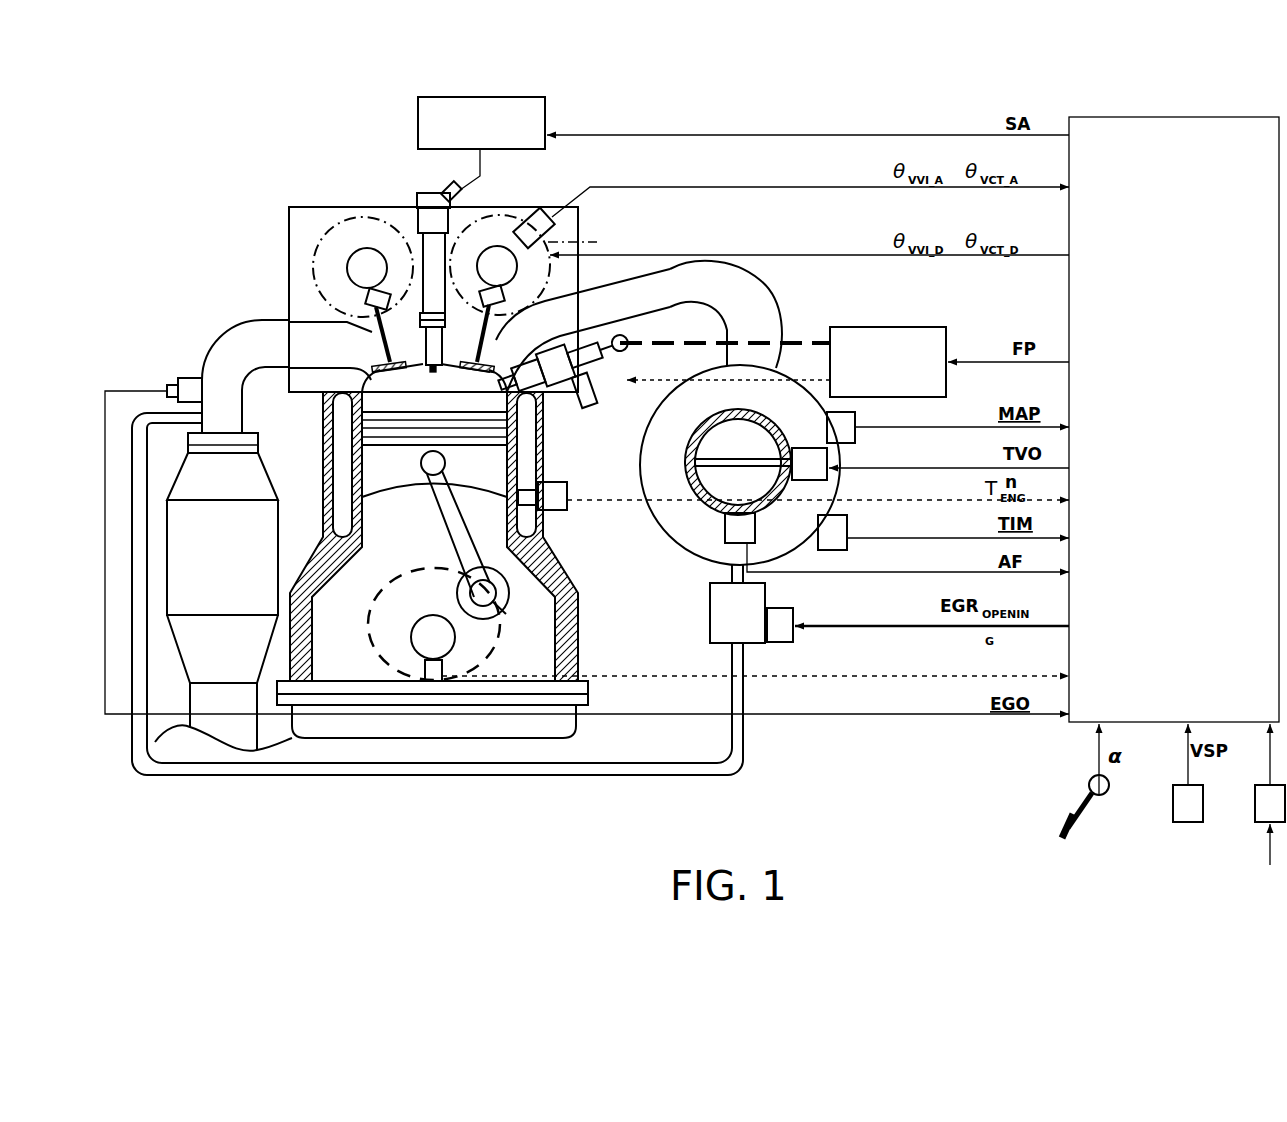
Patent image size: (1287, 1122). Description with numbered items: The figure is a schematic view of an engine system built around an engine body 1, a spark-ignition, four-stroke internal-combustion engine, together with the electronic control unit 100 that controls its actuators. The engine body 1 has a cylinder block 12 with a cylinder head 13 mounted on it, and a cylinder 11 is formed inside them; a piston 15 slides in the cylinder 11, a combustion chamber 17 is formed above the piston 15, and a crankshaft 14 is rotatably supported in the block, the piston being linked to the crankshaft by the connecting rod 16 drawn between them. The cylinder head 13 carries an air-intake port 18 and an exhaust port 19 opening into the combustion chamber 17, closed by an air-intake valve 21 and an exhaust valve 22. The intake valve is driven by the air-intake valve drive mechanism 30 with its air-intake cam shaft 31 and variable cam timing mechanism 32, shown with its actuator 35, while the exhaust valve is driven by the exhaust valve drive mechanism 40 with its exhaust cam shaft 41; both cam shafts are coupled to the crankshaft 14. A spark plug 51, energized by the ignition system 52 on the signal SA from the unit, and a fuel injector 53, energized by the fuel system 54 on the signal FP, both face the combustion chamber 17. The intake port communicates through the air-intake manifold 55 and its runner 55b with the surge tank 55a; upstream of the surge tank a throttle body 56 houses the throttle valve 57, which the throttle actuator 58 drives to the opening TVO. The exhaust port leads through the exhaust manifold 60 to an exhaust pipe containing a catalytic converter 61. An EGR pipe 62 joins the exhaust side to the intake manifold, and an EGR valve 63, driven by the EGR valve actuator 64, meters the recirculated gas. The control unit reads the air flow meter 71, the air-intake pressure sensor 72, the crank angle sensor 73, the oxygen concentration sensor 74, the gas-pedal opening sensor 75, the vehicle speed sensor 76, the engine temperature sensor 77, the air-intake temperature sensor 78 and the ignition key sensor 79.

The engine body 1 is at (226, 180).
The cylinder 11 is at (322, 422).
The cylinder block 12 is at (585, 633).
The cylinder head 13 is at (313, 393).
The crankshaft 14 is at (434, 624).
The piston 15 is at (415, 490).
The connecting rod 16 is at (437, 533).
The combustion chamber 17 is at (434, 384).
The air-intake port 18 is at (583, 330).
The exhaust port 19 is at (330, 351).
The air-intake valve 21 is at (484, 371).
The exhaust valve 22 is at (378, 371).
The air-intake valve drive mechanism 30 is at (513, 207).
The air-intake cam shaft 31 is at (497, 266).
The variable cam timing mechanism 32 is at (596, 250).
The valve actuator 35 is at (542, 213).
The exhaust valve drive mechanism 40 is at (345, 210).
The exhaust cam shaft 41 is at (367, 268).
The spark plug 51 is at (420, 345).
The ignition system 52 is at (547, 113).
The fuel injector 53 is at (555, 400).
The fuel system 54 is at (888, 327).
The air-intake manifold 55 is at (740, 413).
The surge tank 55a is at (740, 465).
The intake runner 55b is at (726, 314).
The throttle body 56 is at (688, 507).
The throttle valve 57 is at (710, 485).
The throttle actuator 58 is at (823, 480).
The exhaust manifold 60 is at (250, 320).
The catalytic converter 61 is at (223, 592).
The EGR pipe 62 is at (745, 750).
The EGR valve 63 is at (737, 604).
The EGR valve actuator 64 is at (777, 608).
The air flow meter 71 is at (713, 540).
The air-intake pressure sensor 72 is at (850, 444).
The crank angle sensor 73 is at (423, 673).
The oxygen concentration sensor 74 is at (185, 376).
The gas-pedal opening sensor 75 is at (1090, 775).
The vehicle speed sensor 76 is at (1173, 805).
The engine temperature sensor 77 is at (558, 512).
The air-intake temperature sensor 78 is at (847, 545).
The sensor 79 is at (1255, 805).
The electronic control unit 100 is at (1198, 115).